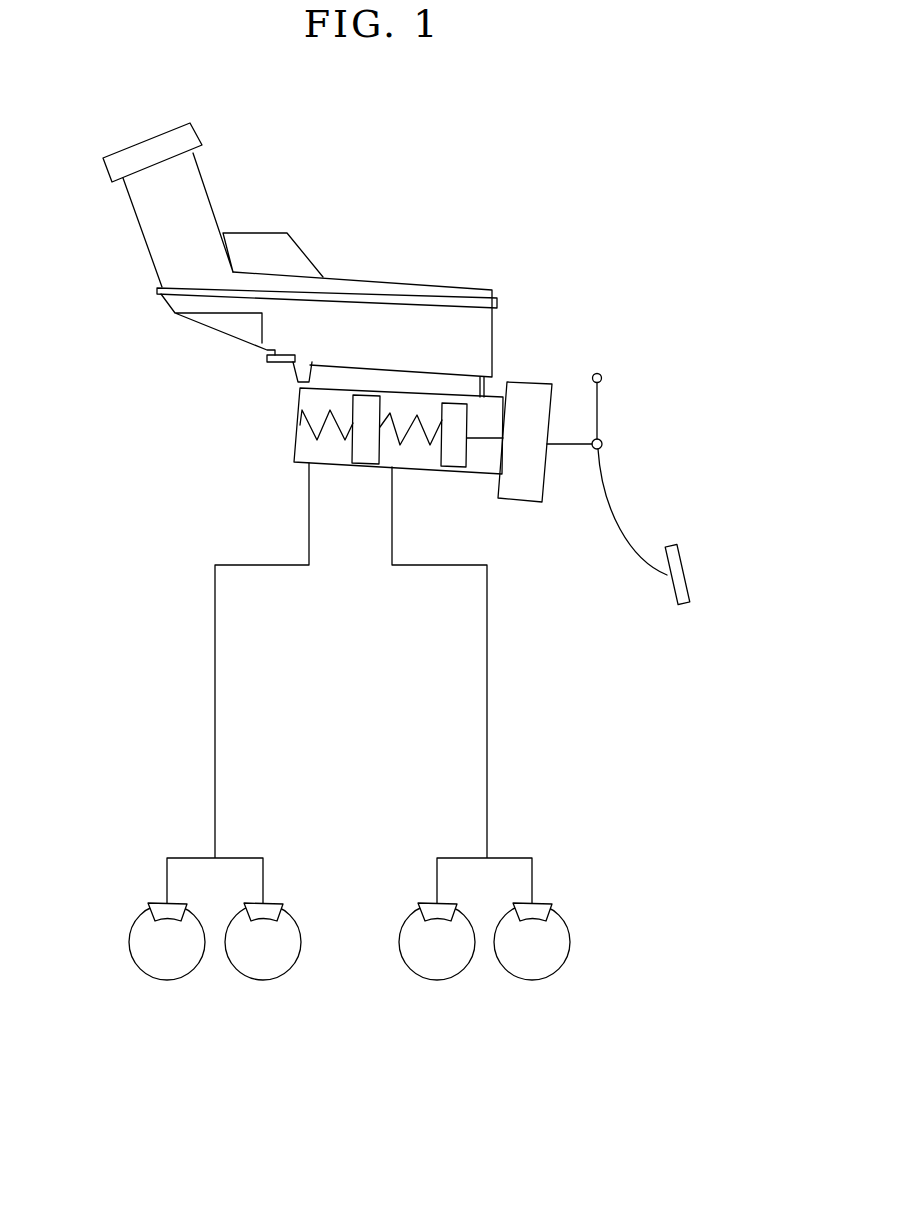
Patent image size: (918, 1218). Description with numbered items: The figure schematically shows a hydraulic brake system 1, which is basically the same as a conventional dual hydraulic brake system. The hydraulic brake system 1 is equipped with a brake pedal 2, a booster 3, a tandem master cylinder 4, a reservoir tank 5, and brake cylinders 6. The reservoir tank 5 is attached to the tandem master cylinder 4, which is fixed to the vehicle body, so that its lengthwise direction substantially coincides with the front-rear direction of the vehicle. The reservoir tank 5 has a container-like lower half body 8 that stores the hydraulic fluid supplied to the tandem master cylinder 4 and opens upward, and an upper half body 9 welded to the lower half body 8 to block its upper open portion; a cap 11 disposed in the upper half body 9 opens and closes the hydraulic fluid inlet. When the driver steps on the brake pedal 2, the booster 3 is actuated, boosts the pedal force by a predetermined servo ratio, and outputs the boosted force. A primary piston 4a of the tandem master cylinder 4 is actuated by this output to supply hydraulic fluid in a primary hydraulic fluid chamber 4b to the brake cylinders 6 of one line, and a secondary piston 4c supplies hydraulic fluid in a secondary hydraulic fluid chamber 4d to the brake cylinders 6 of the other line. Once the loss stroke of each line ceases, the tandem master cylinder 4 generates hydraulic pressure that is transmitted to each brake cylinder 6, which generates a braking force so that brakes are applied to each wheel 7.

The hydraulic brake system 1 is at (150, 611).
The brake pedal 2 is at (680, 572).
The booster 3 is at (523, 490).
The tandem master cylinder 4 is at (294, 445).
The primary piston 4a is at (453, 462).
The primary hydraulic fluid chamber 4b is at (420, 462).
The secondary piston 4c is at (367, 456).
The secondary hydraulic fluid chamber 4d is at (332, 454).
The reservoir tank 5 is at (587, 272).
The brake cylinders 6 is at (155, 905).
The wheel 7 is at (170, 972).
The lower half body 8 is at (483, 338).
The upper half body 9 is at (483, 297).
The cap 11 is at (190, 138).